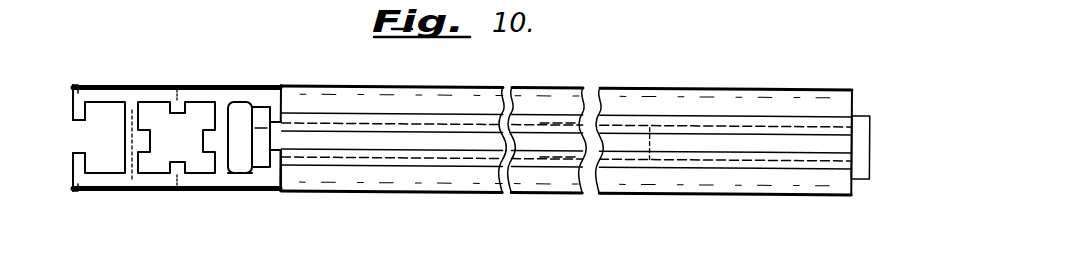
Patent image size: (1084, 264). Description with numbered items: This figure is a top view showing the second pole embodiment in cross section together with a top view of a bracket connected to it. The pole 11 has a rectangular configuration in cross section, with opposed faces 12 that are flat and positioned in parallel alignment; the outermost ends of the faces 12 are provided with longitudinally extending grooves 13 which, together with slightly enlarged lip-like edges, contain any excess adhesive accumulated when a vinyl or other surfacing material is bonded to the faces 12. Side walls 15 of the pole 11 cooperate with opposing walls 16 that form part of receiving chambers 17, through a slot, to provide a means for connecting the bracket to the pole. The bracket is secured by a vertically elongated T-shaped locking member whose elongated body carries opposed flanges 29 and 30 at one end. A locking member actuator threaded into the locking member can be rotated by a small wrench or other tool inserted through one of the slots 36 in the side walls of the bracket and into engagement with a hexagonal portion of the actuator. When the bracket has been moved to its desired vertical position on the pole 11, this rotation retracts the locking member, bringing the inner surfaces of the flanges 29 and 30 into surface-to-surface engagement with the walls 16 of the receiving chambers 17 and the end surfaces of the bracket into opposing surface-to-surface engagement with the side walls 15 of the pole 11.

The pole 11 is at (164, 144).
The opposed faces 12 is at (130, 84).
The longitudinally extending grooves 13 is at (78, 85).
The side walls 15 is at (286, 98).
The opposing walls 16 is at (262, 139).
The receiving chambers 17 is at (240, 125).
The flange 29 is at (256, 172).
The flange 30 is at (258, 106).
The slots 36 is at (552, 118).